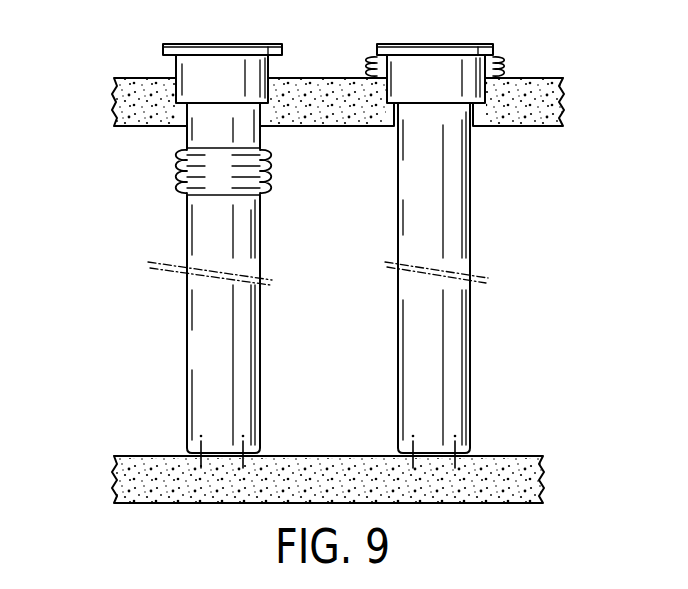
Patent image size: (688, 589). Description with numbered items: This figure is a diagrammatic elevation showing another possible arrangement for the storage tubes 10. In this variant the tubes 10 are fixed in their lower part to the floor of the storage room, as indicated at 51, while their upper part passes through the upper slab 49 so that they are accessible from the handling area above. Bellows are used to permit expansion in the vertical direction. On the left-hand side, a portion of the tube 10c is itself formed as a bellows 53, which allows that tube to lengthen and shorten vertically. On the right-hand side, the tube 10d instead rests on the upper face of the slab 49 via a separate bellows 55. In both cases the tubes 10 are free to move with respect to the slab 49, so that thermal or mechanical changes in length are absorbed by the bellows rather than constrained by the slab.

The tubes 10 is at (182, 248).
The tube 10c is at (205, 325).
The tube 10d is at (478, 241).
The upper slab 49 is at (135, 92).
The fixing to the floor 51 is at (198, 450).
The bellows 53 is at (177, 176).
The bellows 55 is at (508, 63).